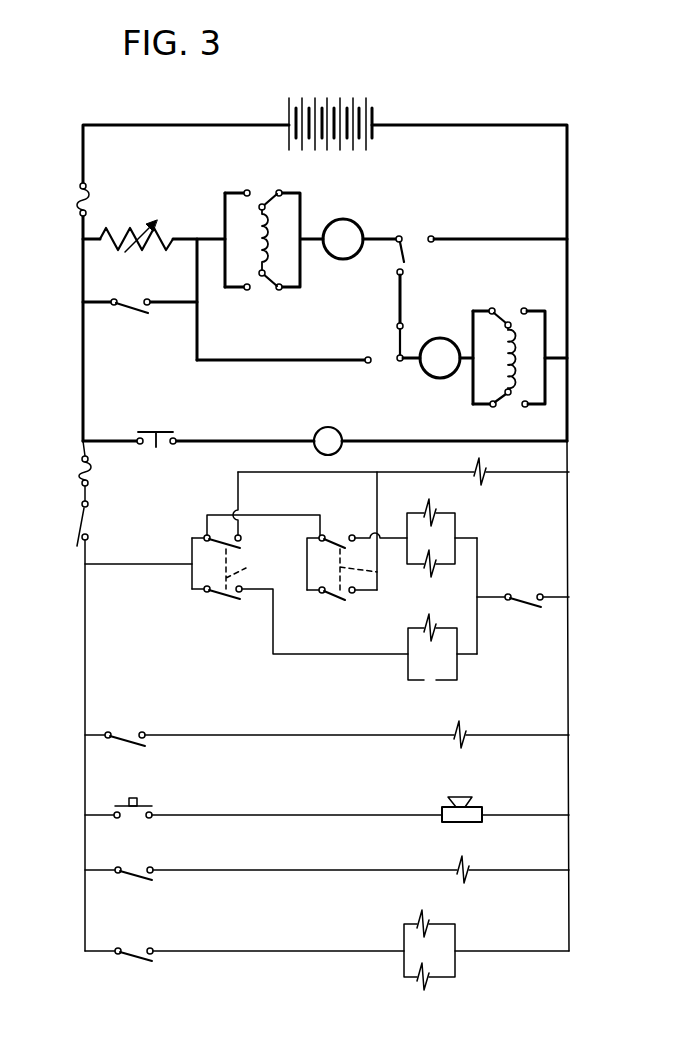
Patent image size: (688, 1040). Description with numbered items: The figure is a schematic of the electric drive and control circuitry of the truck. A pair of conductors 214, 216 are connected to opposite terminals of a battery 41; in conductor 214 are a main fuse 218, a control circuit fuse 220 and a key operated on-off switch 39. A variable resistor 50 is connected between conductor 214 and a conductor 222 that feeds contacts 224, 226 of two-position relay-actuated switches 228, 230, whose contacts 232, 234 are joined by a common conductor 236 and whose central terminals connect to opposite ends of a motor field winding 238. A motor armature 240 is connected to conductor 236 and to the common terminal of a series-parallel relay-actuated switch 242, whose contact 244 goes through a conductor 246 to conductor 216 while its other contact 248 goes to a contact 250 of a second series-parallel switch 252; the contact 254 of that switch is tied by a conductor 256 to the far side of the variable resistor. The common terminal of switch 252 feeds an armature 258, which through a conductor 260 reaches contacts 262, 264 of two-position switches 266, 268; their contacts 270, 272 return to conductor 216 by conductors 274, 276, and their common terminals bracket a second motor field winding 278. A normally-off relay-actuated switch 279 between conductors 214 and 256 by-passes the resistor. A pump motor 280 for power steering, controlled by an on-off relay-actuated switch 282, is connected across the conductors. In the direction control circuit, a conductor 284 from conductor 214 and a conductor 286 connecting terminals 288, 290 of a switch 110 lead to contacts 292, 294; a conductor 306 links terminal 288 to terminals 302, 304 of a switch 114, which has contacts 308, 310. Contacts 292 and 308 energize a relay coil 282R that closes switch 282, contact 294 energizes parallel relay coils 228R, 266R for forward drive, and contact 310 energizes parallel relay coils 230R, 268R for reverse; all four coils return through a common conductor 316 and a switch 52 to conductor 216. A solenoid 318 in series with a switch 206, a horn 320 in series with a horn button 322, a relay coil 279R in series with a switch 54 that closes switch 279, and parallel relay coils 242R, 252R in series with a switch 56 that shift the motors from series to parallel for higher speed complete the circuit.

The conductor 214 is at (150, 125).
The conductor 216 is at (455, 125).
The battery 41 is at (320, 100).
The main fuse 218 is at (81, 200).
The variable resistor 50 is at (133, 236).
The conductor 222 is at (225, 205).
The contact 224 is at (247, 190).
The contact 226 is at (247, 290).
The two-position relay-actuated switch 228 is at (265, 204).
The two-position relay-actuated switch 230 is at (268, 280).
The contact 232 is at (281, 191).
The contact 234 is at (282, 288).
The common conductor 236 is at (302, 210).
The motor field winding 238 is at (258, 228).
The motor armature 240 is at (360, 226).
The series-parallel relay-actuated switch 242 is at (410, 248).
The contact 244 is at (431, 243).
The conductor 246 is at (492, 239).
The contact 248 is at (397, 272).
The contact 250 is at (403, 325).
The series-parallel relay-actuated switch 252 is at (397, 358).
The contact 254 is at (368, 357).
The conductor 256 is at (230, 361).
The armature 258 is at (430, 374).
The conductor 260 is at (473, 328).
The contact 262 is at (494, 308).
The contact 264 is at (491, 406).
The two-position relay-actuated switch 266 is at (505, 318).
The two-position relay-actuated switch 268 is at (507, 397).
The contact 270 is at (528, 310).
The contact 272 is at (528, 407).
The conductor 274 is at (546, 332).
The conductor 276 is at (557, 360).
The motor field winding 278 is at (514, 352).
The normally-off relay-actuated switch 279 is at (131, 310).
The motor 280 is at (318, 432).
The on-off relay-actuated switch 282 is at (150, 432).
The control circuit fuse 220 is at (83, 472).
The key operated on-off switch 39 is at (80, 521).
The conductor 284 is at (152, 566).
The conductor 286 is at (192, 555).
The terminal 288 is at (206, 535).
The terminal 290 is at (206, 592).
The contact 292 is at (241, 536).
The contact 294 is at (240, 592).
The switch 110 is at (253, 569).
The conductor 306 is at (288, 514).
The terminal 302 is at (323, 535).
The terminal 304 is at (322, 593).
The contact 308 is at (353, 593).
The contact 310 is at (354, 535).
The switch 114 is at (378, 573).
The relay coil 282R is at (484, 471).
The relay coil 230R is at (430, 508).
The relay coil 268R is at (442, 538).
The relay coil 228R is at (428, 628).
The relay coil 266R is at (425, 683).
The common conductor 316 is at (478, 566).
The switch 52 is at (523, 607).
The switch 206 is at (126, 742).
The solenoid 318 is at (462, 732).
The horn button 322 is at (136, 798).
The horn 320 is at (462, 796).
The switch 54 is at (136, 871).
The relay coil 279R is at (465, 868).
The switch 56 is at (136, 952).
The relay coil 242R is at (427, 924).
The relay coil 252R is at (427, 980).